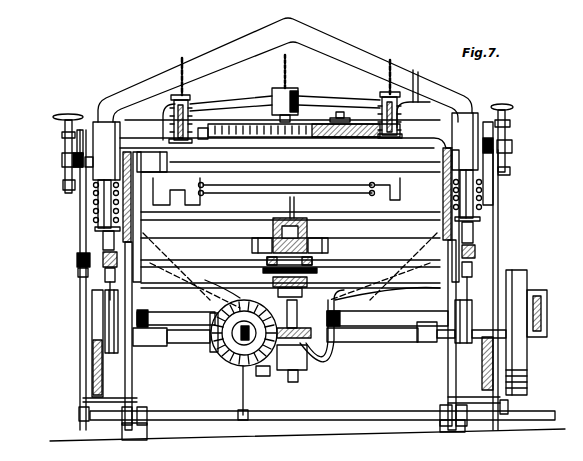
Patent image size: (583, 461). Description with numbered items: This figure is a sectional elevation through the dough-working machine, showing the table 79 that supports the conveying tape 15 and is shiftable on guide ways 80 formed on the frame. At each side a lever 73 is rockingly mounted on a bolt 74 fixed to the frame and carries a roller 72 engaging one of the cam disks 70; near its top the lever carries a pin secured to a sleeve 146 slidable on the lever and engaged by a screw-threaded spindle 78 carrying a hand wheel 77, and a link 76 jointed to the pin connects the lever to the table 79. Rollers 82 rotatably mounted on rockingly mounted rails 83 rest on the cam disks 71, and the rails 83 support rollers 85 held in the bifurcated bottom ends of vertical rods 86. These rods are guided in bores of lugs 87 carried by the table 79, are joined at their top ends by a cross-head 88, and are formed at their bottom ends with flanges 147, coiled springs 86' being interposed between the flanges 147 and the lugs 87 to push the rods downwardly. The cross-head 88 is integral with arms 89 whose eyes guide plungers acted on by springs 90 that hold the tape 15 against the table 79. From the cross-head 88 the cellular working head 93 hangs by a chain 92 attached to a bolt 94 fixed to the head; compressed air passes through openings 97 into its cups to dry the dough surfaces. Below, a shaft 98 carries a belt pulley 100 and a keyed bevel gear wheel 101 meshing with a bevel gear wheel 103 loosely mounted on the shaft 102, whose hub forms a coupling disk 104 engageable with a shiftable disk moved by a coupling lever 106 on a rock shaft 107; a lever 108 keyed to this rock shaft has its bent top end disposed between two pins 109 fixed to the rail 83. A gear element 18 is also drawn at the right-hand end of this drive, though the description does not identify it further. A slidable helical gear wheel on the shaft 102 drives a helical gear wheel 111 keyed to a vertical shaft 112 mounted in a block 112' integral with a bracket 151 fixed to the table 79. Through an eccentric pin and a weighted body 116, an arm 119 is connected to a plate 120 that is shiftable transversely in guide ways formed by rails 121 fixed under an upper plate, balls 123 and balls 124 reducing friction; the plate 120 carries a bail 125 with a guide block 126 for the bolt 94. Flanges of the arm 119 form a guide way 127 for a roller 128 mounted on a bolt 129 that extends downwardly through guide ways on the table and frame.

The conveying tape 15 is at (312, 137).
The gear 18 is at (540, 300).
The cam disks 70 is at (100, 386).
The cam disks 71 is at (112, 353).
The rollers 72 is at (80, 337).
The levers 73 is at (80, 225).
The bolts 74 is at (79, 413).
The links 76 is at (63, 146).
The hand wheels 77 is at (66, 114).
The screw-threaded spindles 78 is at (62, 134).
The table 79 is at (152, 146).
The guide ways 80 is at (97, 190).
The rollers 82 is at (105, 275).
The rails 83 is at (114, 260).
The rollers 85 is at (103, 240).
The vertical rods 86 is at (303, 206).
The coiled springs 86' is at (328, 289).
The lugs 87 is at (120, 128).
The cross-head 88 is at (328, 42).
The arms 89 is at (391, 78).
The springs 90 is at (404, 110).
The chain 92 is at (286, 80).
The working head 93 is at (318, 120).
The bolt 94 is at (272, 92).
The openings 97 is at (190, 84).
The shaft 98 is at (395, 342).
The belt pulley 100 is at (527, 353).
The bevel gear wheel 101 is at (227, 351).
The shaft 102 is at (241, 341).
The bevel gear wheel 103 is at (262, 372).
The coupling disk 104 is at (219, 347).
The coupling lever 106 is at (245, 398).
The rock shaft 107 is at (340, 406).
The lever 108 is at (77, 260).
The pins 109 is at (78, 272).
The helical gear wheel 111 is at (336, 352).
The vertical shaft 112 is at (309, 311).
The block 112' is at (312, 383).
The weighted body 116 is at (328, 246).
The arm 119 is at (308, 226).
The plate 120 is at (405, 203).
The rails 121 is at (236, 205).
The balls 123 is at (196, 205).
The balls 124 is at (203, 183).
The bail 125 is at (258, 106).
The guide block 126 is at (298, 96).
The guide way 127 is at (270, 244).
The roller 128 is at (252, 246).
The bolt 129 is at (295, 214).
The sleeves 146 is at (64, 160).
The flanges 147 is at (478, 230).
The bracket 151 is at (207, 298).